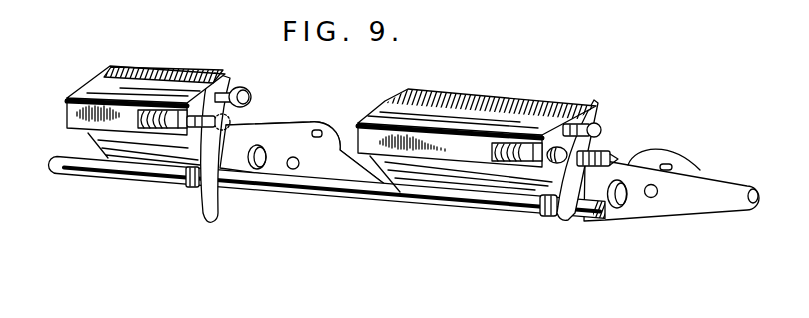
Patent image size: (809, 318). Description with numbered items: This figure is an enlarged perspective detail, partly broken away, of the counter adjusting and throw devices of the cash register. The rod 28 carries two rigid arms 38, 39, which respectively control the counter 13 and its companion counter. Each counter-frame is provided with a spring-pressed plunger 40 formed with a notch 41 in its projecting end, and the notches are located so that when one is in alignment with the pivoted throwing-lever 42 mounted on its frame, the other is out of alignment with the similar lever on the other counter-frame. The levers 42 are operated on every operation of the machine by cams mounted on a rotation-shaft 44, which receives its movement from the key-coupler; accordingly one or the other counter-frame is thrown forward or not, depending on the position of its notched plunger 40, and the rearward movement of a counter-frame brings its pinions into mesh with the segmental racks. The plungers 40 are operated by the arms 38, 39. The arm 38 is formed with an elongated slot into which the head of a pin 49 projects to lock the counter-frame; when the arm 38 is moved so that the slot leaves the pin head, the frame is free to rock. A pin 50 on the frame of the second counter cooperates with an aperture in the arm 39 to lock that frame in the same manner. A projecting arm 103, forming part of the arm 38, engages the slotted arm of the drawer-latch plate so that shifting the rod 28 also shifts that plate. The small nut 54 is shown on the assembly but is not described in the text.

The counter 13 is at (108, 86).
The rod 28 is at (331, 200).
The rigid arm 38 is at (310, 141).
The rigid arm 39 is at (548, 204).
The spring-pressed plunger 40 is at (198, 110).
The notch 41 is at (190, 103).
The throwing-lever 42 is at (489, 171).
The rotation-shaft 44 is at (583, 165).
The pin 49 is at (244, 88).
The pin 50 is at (594, 104).
The nut 54 is at (599, 132).
The projecting arm 103 is at (210, 212).